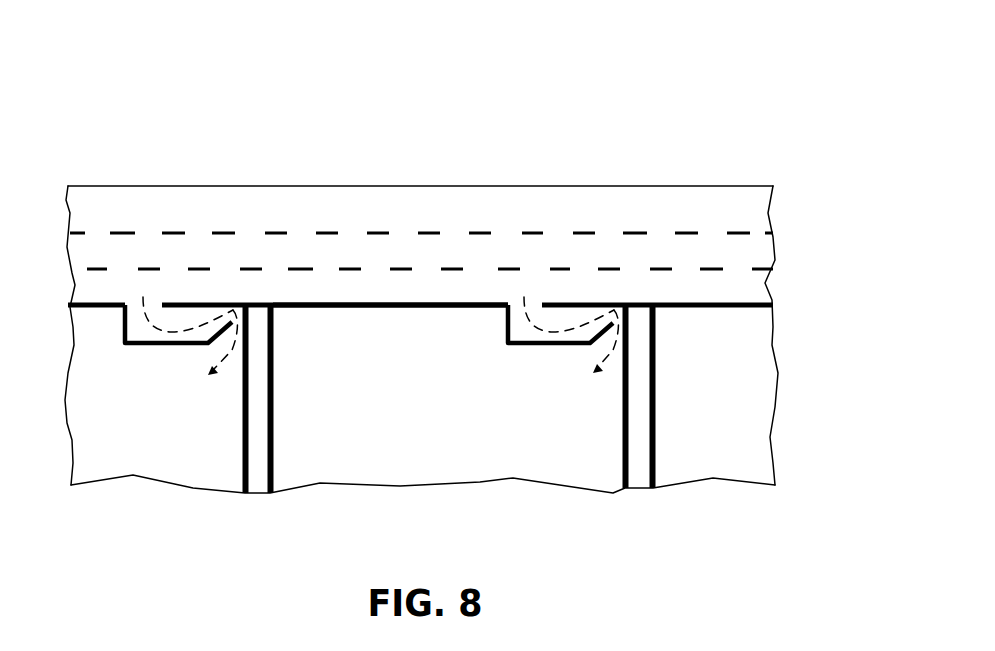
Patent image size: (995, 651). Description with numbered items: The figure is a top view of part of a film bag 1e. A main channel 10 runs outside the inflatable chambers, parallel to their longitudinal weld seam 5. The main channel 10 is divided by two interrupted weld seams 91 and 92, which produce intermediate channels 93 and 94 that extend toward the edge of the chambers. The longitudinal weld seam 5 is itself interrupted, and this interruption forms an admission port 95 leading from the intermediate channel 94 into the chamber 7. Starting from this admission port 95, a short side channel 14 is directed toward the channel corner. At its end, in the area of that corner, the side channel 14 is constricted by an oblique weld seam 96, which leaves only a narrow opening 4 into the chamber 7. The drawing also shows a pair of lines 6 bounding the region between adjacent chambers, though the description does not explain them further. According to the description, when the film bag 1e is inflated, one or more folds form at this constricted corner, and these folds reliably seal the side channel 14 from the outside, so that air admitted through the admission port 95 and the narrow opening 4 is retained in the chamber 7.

The film bag 1e is at (698, 98).
The main channel 10 is at (727, 186).
The interrupted weld seam 91 is at (278, 233).
The interrupted weld seam 92 is at (345, 268).
The intermediate channel 93 is at (387, 252).
The intermediate channel 94 is at (461, 290).
The admission port 95 is at (535, 305).
The narrow opening 4 is at (617, 306).
The longitudinal weld seam 5 is at (370, 310).
The side channel 14 is at (530, 343).
The vertical walls 6 is at (274, 457).
The chamber 7 is at (550, 468).
The oblique weld seam 96 is at (607, 353).